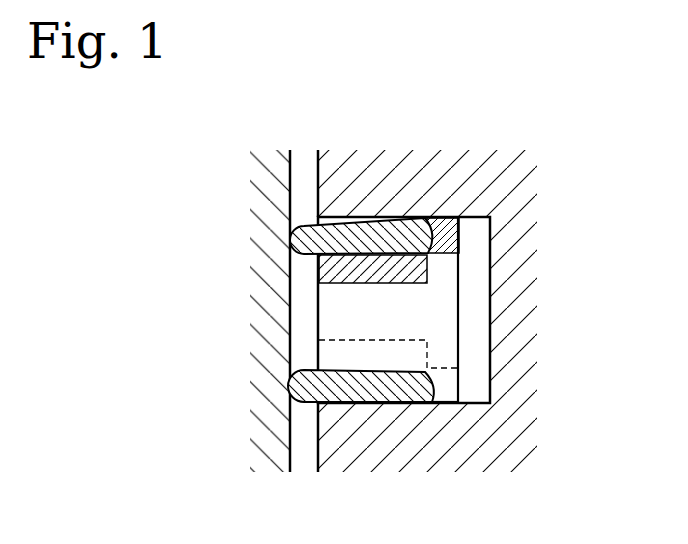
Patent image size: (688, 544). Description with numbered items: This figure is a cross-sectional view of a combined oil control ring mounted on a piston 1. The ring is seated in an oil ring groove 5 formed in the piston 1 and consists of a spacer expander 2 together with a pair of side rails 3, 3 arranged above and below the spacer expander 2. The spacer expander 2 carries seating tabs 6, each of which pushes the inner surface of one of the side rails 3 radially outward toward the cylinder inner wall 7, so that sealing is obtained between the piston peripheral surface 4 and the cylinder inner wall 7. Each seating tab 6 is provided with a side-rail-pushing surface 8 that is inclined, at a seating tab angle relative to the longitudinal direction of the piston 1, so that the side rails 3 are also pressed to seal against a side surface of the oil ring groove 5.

The piston 1 is at (520, 196).
The spacer expander 2 is at (450, 298).
The side rails 3 is at (388, 240).
The piston peripheral surface 4 is at (318, 178).
The oil ring groove 5 is at (472, 353).
The seating tab 6 is at (392, 246).
The cylinder inner wall 7 is at (291, 194).
The side-rail-pushing surface 8 is at (428, 250).